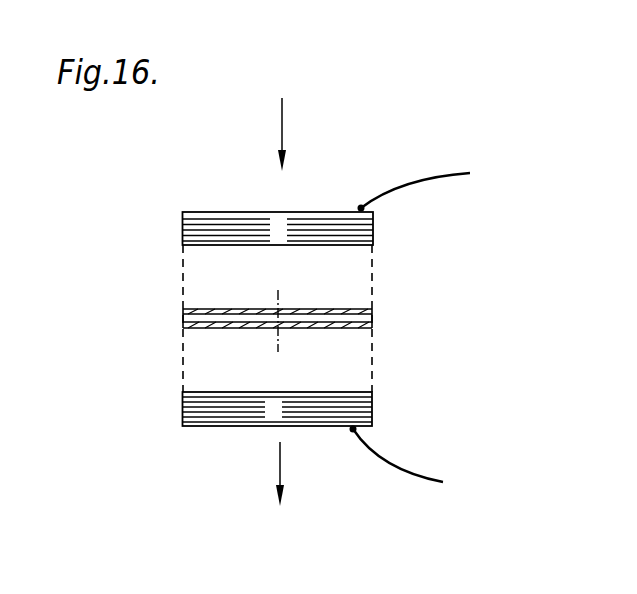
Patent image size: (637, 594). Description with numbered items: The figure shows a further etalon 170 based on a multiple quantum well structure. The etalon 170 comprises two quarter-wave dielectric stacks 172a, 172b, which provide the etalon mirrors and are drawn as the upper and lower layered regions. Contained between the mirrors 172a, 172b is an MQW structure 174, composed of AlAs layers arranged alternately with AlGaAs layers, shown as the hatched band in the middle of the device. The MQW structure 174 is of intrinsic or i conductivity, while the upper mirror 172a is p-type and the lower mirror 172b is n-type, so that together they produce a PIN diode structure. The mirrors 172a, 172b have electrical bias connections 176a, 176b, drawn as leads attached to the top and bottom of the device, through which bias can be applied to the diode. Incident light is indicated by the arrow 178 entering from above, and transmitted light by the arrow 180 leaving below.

The etalon 170 is at (332, 182).
The quarter-wave dielectric stack 172a is at (186, 237).
The quarter-wave dielectric stack 172b is at (185, 409).
The MQW structure 174 is at (192, 282).
The electrical bias connection 176a is at (422, 183).
The electrical bias connection 176b is at (393, 458).
The incident light 178 is at (281, 120).
The transmitted light 180 is at (280, 458).